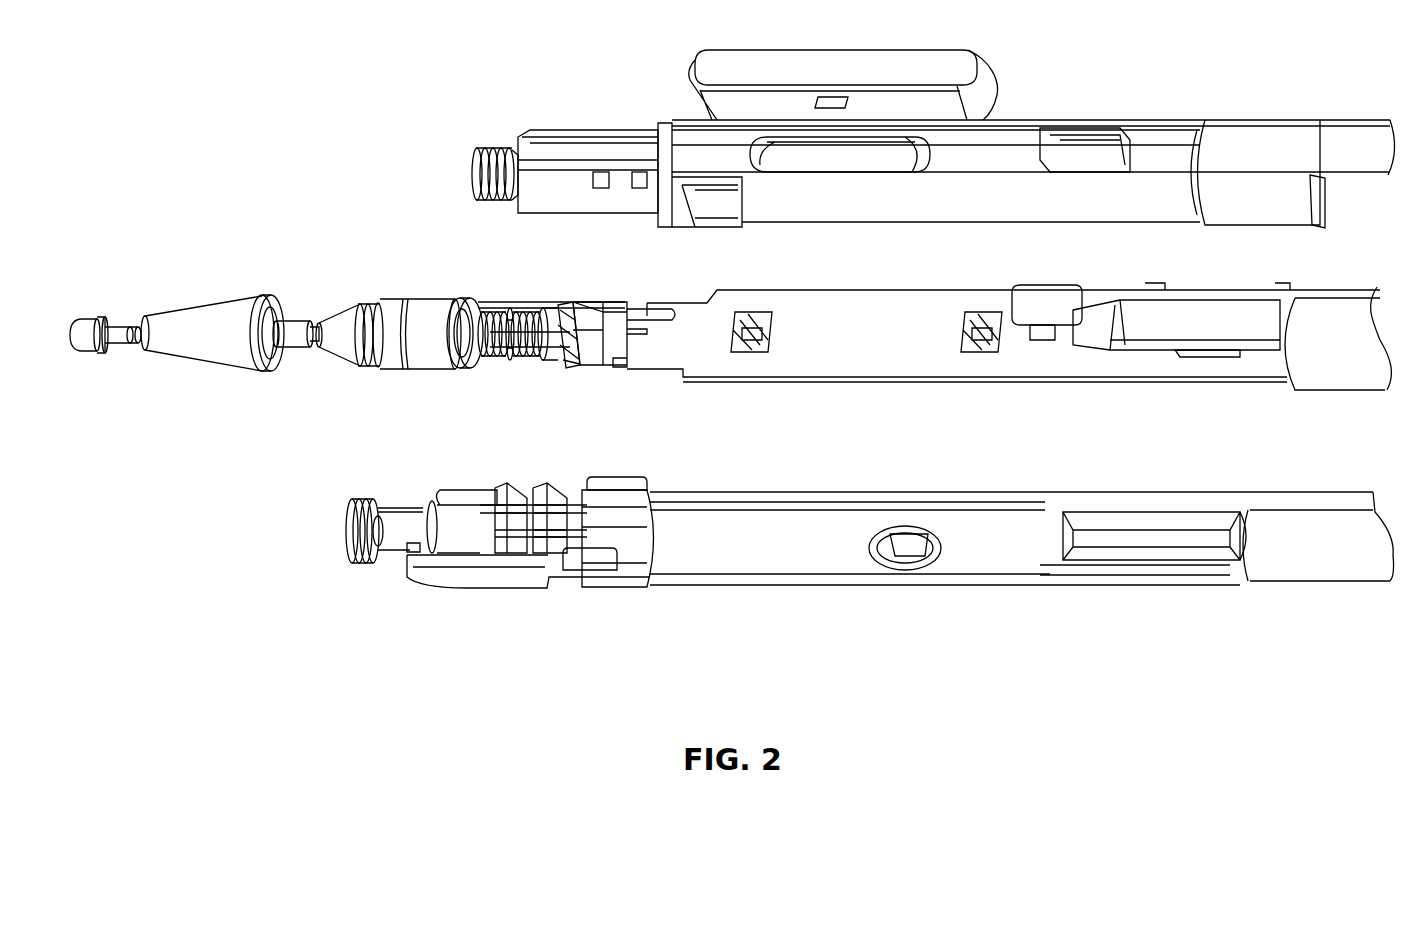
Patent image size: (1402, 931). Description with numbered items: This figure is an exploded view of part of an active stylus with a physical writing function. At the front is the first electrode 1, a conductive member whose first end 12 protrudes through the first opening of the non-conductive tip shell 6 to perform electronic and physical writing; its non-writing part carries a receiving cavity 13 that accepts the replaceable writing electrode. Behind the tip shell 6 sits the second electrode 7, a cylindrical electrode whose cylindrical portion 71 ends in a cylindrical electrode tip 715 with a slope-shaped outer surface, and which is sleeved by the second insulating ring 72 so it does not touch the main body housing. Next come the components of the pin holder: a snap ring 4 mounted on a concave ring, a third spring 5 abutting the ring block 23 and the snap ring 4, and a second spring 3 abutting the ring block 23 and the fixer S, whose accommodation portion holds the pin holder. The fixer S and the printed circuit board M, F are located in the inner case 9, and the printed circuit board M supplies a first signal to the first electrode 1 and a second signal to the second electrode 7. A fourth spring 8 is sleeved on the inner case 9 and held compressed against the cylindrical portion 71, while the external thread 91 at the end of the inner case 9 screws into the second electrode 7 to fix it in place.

The first electrode 1 is at (110, 460).
The first end of the first electrode 12 is at (87, 338).
The tip shell 6 is at (200, 342).
The receiving cavity 13 is at (293, 338).
The second electrode 7 is at (407, 227).
The cylindrical electrode tip 715 is at (345, 338).
The second insulating ring 72 is at (377, 298).
The cylindrical portion 71 is at (420, 298).
The snap ring 4 is at (472, 298).
The fourth spring 8 is at (507, 298).
The third spring 5 is at (502, 358).
The second spring 3 is at (573, 298).
The ring block 23 is at (512, 360).
The fixer S is at (557, 352).
The printed circuit board F is at (610, 357).
The printed circuit board M is at (835, 298).
The external thread 91 is at (375, 560).
The inner case 9 is at (1065, 587).